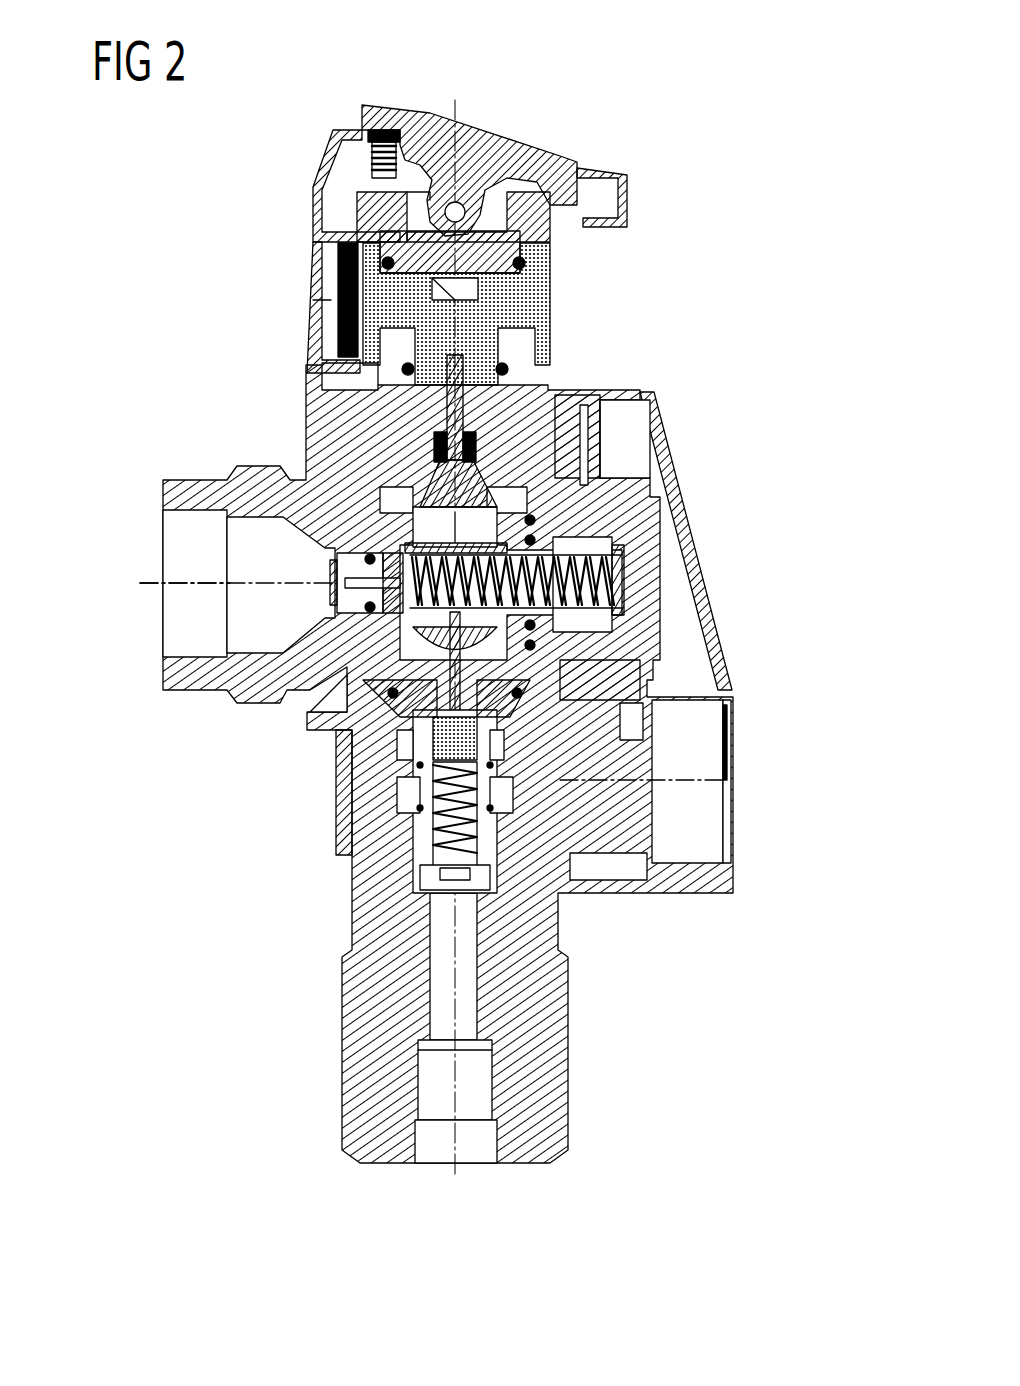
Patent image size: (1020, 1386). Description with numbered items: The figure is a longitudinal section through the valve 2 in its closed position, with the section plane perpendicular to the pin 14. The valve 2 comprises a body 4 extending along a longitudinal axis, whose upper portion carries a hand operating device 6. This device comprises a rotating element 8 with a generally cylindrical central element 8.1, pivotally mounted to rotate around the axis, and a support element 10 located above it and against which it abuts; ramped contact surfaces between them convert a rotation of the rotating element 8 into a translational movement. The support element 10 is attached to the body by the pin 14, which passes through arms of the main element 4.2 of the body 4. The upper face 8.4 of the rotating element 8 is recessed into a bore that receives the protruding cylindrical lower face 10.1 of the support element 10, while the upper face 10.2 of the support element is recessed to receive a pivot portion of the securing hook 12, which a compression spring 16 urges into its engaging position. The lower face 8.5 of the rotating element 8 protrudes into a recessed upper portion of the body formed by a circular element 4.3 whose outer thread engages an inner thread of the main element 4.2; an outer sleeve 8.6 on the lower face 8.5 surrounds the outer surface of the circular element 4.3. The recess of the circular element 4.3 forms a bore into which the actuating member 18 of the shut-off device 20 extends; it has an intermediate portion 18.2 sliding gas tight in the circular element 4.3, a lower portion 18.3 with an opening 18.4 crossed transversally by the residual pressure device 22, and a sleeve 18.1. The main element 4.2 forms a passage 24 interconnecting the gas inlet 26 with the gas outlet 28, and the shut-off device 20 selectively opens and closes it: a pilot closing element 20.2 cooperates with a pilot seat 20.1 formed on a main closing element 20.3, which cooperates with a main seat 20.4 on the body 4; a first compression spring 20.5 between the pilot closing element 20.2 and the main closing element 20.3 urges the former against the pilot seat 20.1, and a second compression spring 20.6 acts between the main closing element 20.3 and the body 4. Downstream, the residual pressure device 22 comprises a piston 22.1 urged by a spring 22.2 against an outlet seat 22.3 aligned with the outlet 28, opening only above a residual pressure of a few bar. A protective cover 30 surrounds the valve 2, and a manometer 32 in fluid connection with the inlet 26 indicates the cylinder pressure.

The valve 2 is at (110, 244).
The body 4 is at (130, 425).
The main element of the body 4.2 is at (332, 411).
The circular element 4.3 is at (525, 428).
The hand operating device 6 is at (545, 189).
The rotating element 8 is at (462, 340).
The central element 8.1 is at (540, 308).
The upper face of the rotating element 8.4 is at (410, 265).
The lower face of the rotating element 8.5 is at (425, 386).
The outer sleeve 8.6 is at (545, 362).
The support element 10 is at (360, 192).
The lower face of the support element 10.1 is at (433, 290).
The upper face of the support element 10.2 is at (418, 195).
The securing hook 12 is at (376, 112).
The pin 14 is at (455, 210).
The spring 16 is at (375, 160).
The actuating member 18 is at (497, 483).
The sleeve 18.1 is at (581, 436).
The intermediate portion 18.2 is at (532, 517).
The lower portion 18.3 is at (423, 498).
The opening 18.4 is at (417, 522).
The shut-off device 20 is at (370, 772).
The pilot seat 20.1 is at (435, 748).
The pilot closing element 20.2 is at (477, 827).
The main closing element 20.3 is at (490, 700).
The main seat 20.4 is at (492, 665).
The first compression spring 20.5 is at (422, 835).
The second compression spring 20.6 is at (410, 790).
The residual pressure device 22 is at (297, 590).
The piston 22.1 is at (330, 612).
The spring 22.2 is at (595, 608).
The outlet seat 22.3 is at (340, 614).
The passage 24 is at (722, 697).
The gas inlet 26 is at (471, 1150).
The gas outlet 28 is at (162, 632).
The protective cover 30 is at (655, 420).
The manometer 32 is at (705, 818).